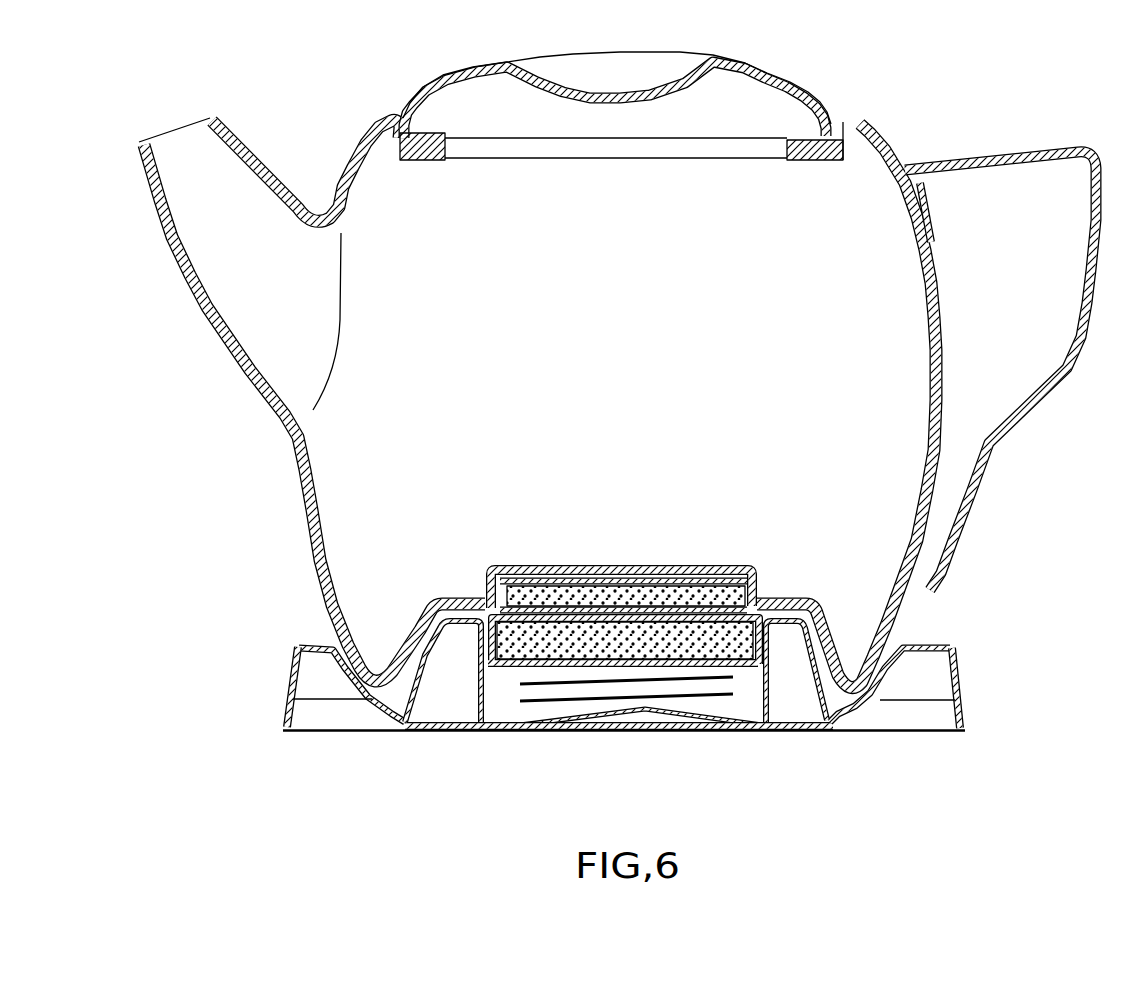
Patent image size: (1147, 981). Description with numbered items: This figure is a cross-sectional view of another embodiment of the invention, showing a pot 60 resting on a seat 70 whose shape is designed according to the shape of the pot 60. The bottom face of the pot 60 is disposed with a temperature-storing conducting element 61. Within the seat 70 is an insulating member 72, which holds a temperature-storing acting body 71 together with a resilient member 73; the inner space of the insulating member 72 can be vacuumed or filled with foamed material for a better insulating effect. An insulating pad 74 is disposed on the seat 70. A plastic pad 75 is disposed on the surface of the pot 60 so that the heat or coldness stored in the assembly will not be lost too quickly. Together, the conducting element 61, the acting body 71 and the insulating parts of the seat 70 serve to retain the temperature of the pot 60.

The pot 60 is at (883, 137).
The temperature-storing conducting element 61 is at (677, 580).
The seat 70 is at (988, 681).
The temperature-storing acting body 71 is at (604, 640).
The insulating member 72 is at (778, 675).
The resilient member 73 is at (707, 721).
The insulating pad 74 is at (812, 722).
The plastic pad 75 is at (893, 643).